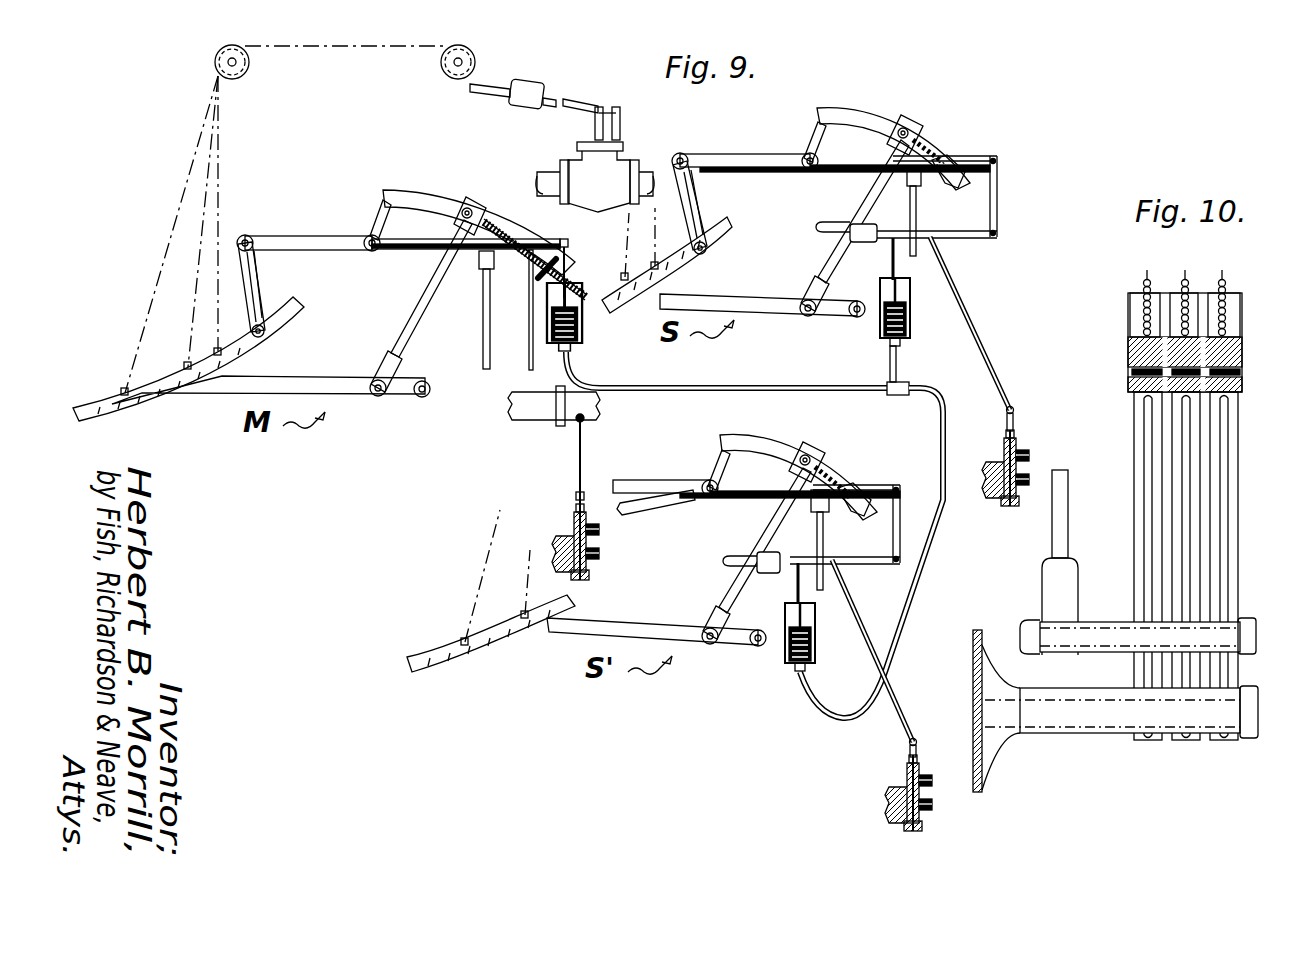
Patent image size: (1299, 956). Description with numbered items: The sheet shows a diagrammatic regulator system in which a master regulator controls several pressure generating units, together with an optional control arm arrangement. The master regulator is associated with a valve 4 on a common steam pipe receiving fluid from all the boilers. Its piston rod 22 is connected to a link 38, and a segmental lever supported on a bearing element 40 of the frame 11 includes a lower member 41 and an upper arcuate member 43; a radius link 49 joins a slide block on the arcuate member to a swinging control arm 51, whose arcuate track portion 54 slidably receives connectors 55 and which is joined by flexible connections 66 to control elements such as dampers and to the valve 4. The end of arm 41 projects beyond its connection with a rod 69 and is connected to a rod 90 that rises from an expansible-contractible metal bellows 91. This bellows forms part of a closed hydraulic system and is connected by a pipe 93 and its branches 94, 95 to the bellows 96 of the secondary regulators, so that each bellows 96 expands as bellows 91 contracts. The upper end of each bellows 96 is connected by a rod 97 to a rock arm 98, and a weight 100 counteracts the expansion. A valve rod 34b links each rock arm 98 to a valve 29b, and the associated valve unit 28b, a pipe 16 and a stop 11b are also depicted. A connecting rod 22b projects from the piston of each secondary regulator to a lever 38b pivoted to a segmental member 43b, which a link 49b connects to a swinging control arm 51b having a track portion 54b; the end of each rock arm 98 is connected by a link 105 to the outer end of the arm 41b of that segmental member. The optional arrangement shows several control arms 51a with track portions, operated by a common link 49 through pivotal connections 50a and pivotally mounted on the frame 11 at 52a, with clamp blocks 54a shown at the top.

In FIG. 9, the valve 4 is at (550, 146).
In FIG. 10, the frame 11 is at (984, 771).
In FIG. 9, the stop bracket 11b is at (942, 190).
In FIG. 9, the pipe 16 is at (546, 413).
In FIG. 9, the piston rod 22 is at (482, 350).
In FIG. 9, the connecting rod 22b is at (912, 225).
In FIG. 9, the valve 28b is at (1012, 498).
In FIG. 9, the valve 29b is at (1016, 428).
In FIG. 9, the valve rod 34b is at (979, 320).
In FIG. 9, the link 38 is at (352, 222).
In FIG. 9, the lever 38b is at (756, 148).
In FIG. 9, the bearing element 40 is at (517, 237).
In FIG. 9, the lower member 41 is at (405, 252).
In FIG. 9, the arm 41b is at (848, 172).
In FIG. 9, the upper arcuate member 43 is at (410, 196).
In FIG. 9, the segmental member 43b is at (852, 114).
In FIG. 9, the radius link 49 is at (414, 298).
In FIG. 10, the radius link 49 is at (1066, 497).
In FIG. 9, the link 49b is at (826, 256).
In FIG. 10, the pivotal connection 50a is at (1246, 628).
In FIG. 9, the control arm 51 is at (278, 380).
In FIG. 10, the control arms 51a is at (1154, 498).
In FIG. 9, the swinging control arm 51b is at (746, 298).
In FIG. 10, the pivotal mounting 52a is at (1254, 698).
In FIG. 9, the track portion 54 is at (148, 405).
In FIG. 10, the clamp block 54a is at (1130, 382).
In FIG. 9, the track portion 54b is at (650, 253).
In FIG. 10, the connector 55 is at (1130, 345).
In FIG. 9, the flexible connections 66 is at (208, 164).
In FIG. 10, the flexible connections 66 is at (1224, 279).
In FIG. 9, the rod 69 is at (530, 352).
In FIG. 9, the rod 90 is at (572, 266).
In FIG. 9, the metal bellows 91 is at (585, 320).
In FIG. 9, the pipe 93 is at (741, 388).
In FIG. 9, the branch 94 is at (898, 362).
In FIG. 9, the branch 95 is at (940, 568).
In FIG. 9, the bellows 96 is at (912, 318).
In FIG. 9, the rod 97 is at (890, 263).
In FIG. 9, the rock arm 98 is at (1000, 238).
In FIG. 9, the weight 100 is at (865, 227).
In FIG. 9, the link 105 is at (999, 193).